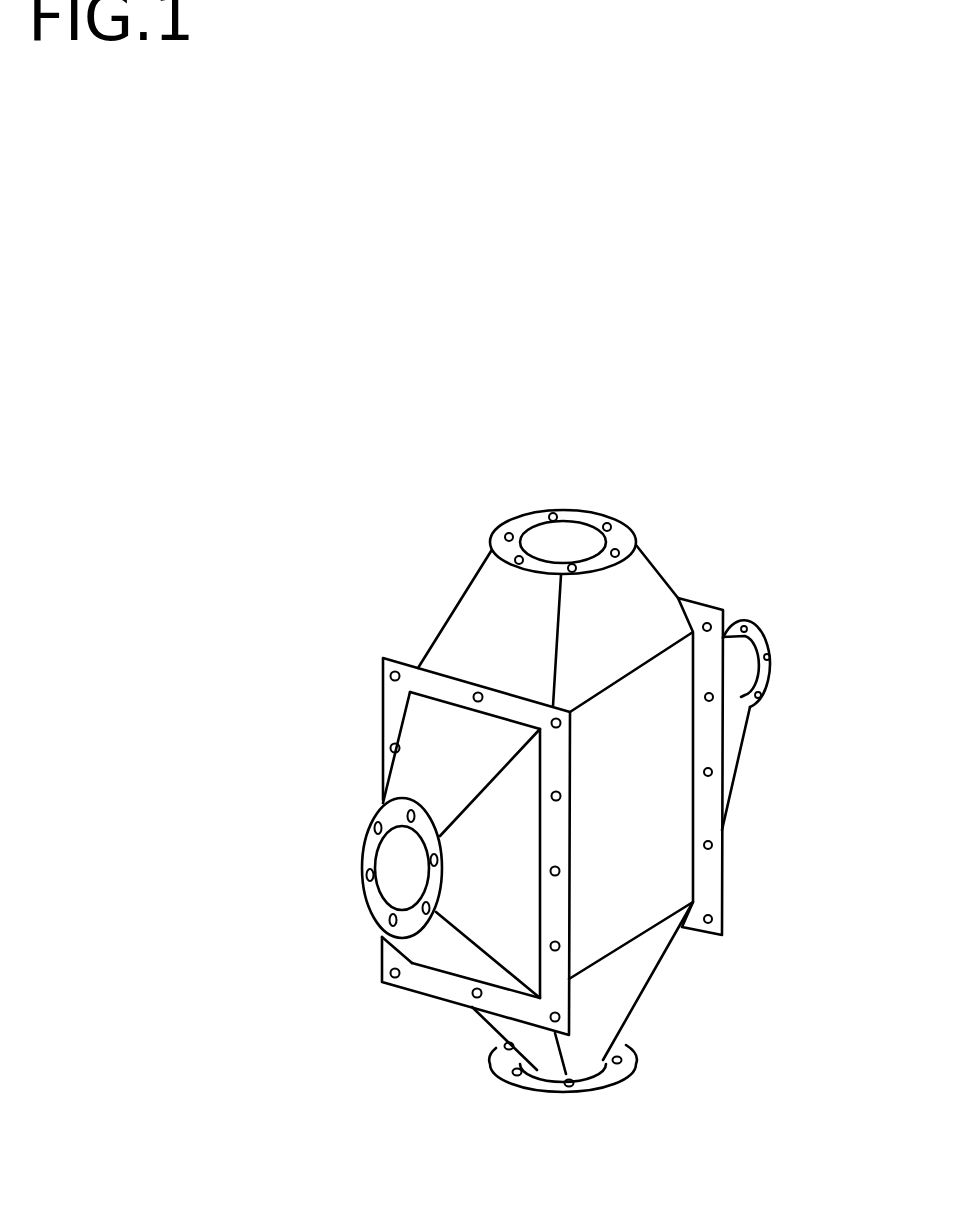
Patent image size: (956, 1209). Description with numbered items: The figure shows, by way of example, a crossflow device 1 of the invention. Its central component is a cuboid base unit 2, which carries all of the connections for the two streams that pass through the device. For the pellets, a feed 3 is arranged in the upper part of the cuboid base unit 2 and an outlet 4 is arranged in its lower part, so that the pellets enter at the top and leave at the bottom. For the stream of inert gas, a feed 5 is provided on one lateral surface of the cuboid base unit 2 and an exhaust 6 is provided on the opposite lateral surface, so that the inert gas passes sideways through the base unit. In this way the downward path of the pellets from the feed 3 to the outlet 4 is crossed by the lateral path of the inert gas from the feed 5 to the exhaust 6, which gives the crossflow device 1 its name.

The crossflow device 1 is at (550, 788).
The cuboid base unit 2 is at (662, 823).
The feed 3 is at (572, 405).
The outlet 4 is at (567, 1097).
The feed 5 is at (302, 913).
The exhaust 6 is at (821, 613).